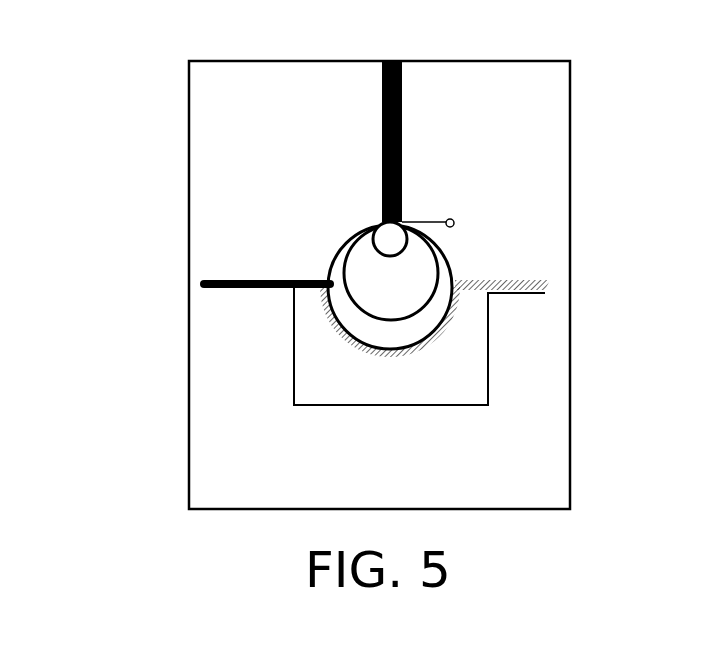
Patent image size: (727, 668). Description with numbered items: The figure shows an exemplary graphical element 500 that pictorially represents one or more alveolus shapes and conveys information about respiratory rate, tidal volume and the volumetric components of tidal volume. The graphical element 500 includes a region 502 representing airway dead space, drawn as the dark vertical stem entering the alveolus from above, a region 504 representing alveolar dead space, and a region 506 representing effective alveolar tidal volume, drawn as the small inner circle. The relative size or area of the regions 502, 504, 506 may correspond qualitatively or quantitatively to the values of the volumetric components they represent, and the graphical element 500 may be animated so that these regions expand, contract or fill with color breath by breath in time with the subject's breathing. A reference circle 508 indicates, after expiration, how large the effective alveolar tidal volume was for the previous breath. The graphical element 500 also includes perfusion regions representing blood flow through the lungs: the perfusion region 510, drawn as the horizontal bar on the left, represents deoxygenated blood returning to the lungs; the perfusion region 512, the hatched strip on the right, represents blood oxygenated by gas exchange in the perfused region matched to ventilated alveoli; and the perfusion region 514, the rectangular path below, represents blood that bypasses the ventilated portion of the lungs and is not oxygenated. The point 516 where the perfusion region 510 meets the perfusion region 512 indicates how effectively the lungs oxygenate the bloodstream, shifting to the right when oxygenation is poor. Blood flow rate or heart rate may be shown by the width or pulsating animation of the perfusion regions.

The graphical element 500 is at (129, 94).
The region 502 is at (402, 122).
The region 504 is at (454, 221).
The region 506 is at (392, 240).
The reference circle 508 is at (440, 258).
The perfusion region 510 is at (216, 280).
The perfusion region 512 is at (550, 285).
The perfusion region 514 is at (294, 389).
The point 516 is at (323, 288).